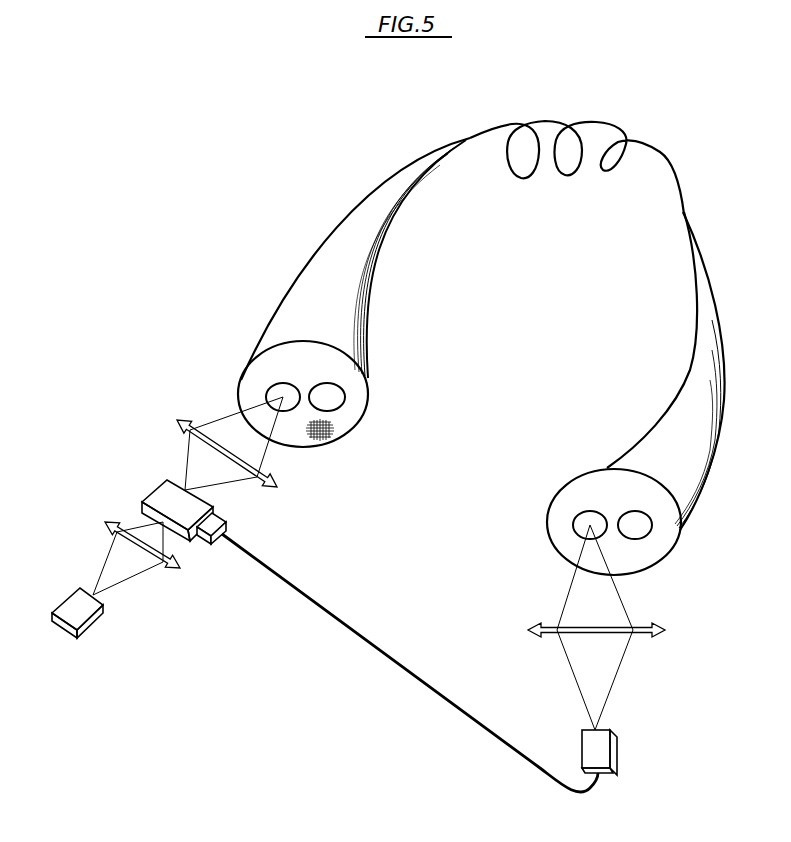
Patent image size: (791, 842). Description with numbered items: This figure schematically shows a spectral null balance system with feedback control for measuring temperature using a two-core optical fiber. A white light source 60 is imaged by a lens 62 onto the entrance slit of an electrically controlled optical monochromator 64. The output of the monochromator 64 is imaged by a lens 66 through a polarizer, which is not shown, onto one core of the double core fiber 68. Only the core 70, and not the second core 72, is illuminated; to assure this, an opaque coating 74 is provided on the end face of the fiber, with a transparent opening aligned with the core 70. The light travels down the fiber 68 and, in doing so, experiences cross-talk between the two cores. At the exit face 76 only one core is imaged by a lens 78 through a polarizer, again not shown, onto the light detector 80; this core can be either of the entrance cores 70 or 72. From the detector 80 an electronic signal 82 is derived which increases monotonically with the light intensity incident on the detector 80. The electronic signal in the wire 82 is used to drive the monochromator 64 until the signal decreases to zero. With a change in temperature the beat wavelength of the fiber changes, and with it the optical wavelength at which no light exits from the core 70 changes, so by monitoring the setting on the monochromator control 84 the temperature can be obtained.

The white light source 60 is at (72, 618).
The lens 62 is at (163, 575).
The electrically controlled optical monochromator 64 is at (165, 491).
The lens 66 is at (267, 479).
The double core fiber 68 is at (292, 303).
The core 70 is at (282, 398).
The second core 72 is at (345, 400).
The opaque coating 74 is at (320, 447).
The exit face 76 is at (575, 492).
The lens 78 is at (642, 637).
The light detector 80 is at (615, 752).
The electronic signal (wire) 82 is at (393, 663).
The monochromator control 84 is at (216, 518).